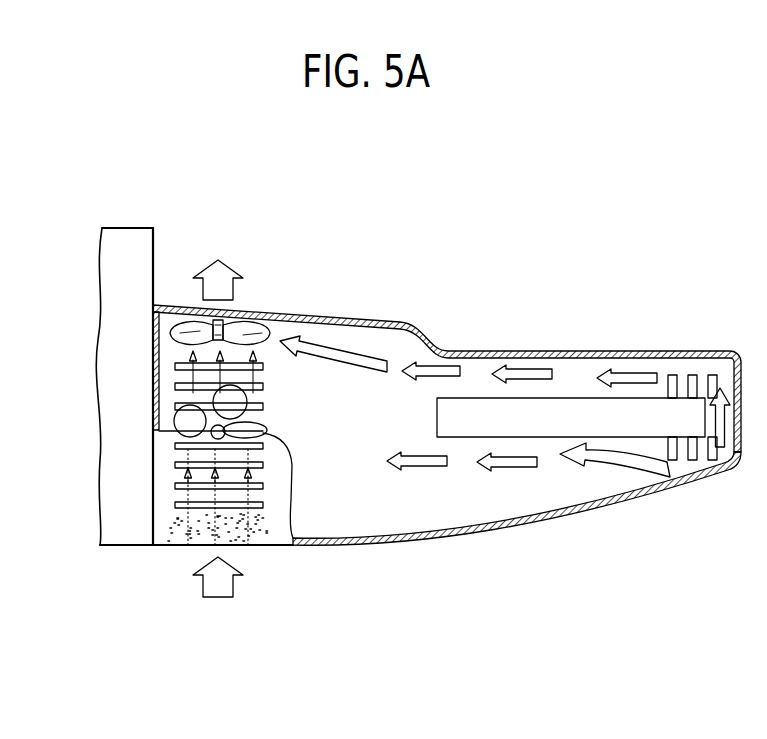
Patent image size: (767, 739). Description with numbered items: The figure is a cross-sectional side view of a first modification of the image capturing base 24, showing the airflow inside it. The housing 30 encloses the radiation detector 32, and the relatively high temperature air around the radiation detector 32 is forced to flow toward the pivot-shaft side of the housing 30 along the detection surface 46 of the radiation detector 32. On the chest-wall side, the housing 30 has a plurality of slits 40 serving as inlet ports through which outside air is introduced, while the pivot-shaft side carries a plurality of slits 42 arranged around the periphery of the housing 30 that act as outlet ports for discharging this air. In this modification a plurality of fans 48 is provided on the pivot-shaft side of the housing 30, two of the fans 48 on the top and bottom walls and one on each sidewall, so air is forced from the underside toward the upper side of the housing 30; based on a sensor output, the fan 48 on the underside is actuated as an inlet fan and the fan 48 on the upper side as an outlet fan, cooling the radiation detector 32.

The image capturing base 24 is at (447, 452).
The housing 30 is at (398, 545).
The radiation detector 32 is at (598, 420).
The slits 40 is at (712, 375).
The slits 42 is at (250, 307).
The detection surface 46 is at (571, 425).
The fans 48 is at (180, 337).